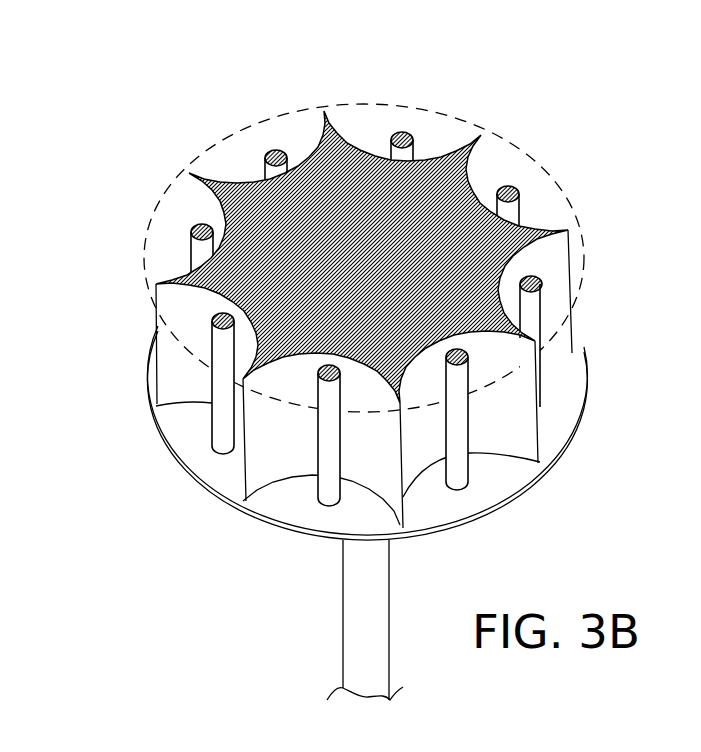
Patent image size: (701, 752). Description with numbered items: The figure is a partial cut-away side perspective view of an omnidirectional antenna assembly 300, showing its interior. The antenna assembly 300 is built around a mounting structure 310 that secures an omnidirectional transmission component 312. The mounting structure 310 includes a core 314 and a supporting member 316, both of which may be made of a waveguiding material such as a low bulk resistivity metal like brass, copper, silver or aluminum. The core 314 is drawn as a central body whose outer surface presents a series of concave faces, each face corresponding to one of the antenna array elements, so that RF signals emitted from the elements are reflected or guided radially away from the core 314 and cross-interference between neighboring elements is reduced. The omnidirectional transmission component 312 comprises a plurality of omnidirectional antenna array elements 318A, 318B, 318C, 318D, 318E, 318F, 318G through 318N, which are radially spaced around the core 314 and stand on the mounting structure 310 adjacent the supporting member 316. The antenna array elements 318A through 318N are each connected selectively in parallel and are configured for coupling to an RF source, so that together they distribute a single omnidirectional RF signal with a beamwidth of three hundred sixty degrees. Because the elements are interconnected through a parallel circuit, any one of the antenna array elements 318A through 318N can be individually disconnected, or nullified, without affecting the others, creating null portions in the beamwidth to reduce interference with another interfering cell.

The omnidirectional antenna assembly 300 is at (120, 130).
The mounting structure 310 is at (597, 350).
The omnidirectional transmission component 312 is at (186, 257).
The core 314 is at (375, 257).
The supporting member 316 is at (237, 127).
The omnidirectional antenna array element 318A is at (212, 430).
The omnidirectional antenna array element 318B is at (328, 500).
The omnidirectional antenna array element 318C is at (460, 470).
The omnidirectional antenna array element 318D is at (533, 317).
The omnidirectional antenna array element 318E is at (519, 206).
The omnidirectional antenna array element 318F is at (413, 153).
The omnidirectional antenna array element 318G is at (287, 168).
The omnidirectional antenna array element 318N is at (191, 240).